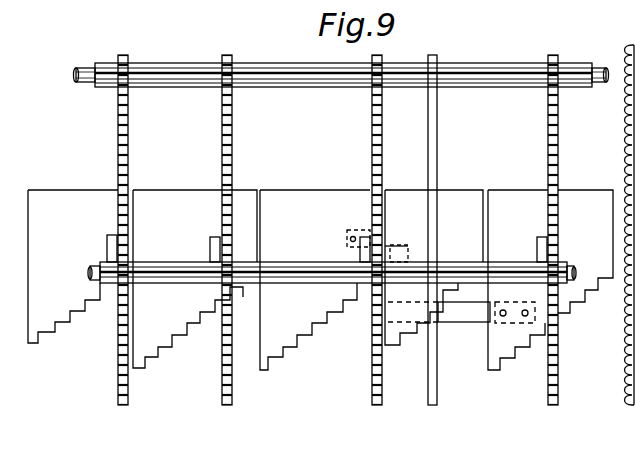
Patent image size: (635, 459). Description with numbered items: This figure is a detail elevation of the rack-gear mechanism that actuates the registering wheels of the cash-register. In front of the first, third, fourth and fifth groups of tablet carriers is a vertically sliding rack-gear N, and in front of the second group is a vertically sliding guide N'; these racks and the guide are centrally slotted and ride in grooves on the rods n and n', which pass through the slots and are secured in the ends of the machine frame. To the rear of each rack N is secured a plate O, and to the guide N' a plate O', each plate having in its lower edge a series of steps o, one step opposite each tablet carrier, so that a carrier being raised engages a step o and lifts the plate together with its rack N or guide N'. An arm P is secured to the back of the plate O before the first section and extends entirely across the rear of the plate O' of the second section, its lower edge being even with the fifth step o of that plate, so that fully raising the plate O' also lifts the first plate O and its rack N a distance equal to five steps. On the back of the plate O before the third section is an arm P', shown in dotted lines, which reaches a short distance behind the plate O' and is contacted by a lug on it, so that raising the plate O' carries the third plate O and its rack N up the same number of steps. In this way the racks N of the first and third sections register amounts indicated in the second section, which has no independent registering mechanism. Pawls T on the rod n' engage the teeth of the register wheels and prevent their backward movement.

The rod n is at (339, 87).
The rod n' is at (324, 261).
The rack-gear N is at (376, 225).
The guide N' is at (447, 230).
The plate O is at (320, 280).
The plate O' is at (434, 267).
The pawl T is at (537, 245).
The arm P is at (461, 312).
The arm P' is at (377, 233).
The step o is at (241, 303).